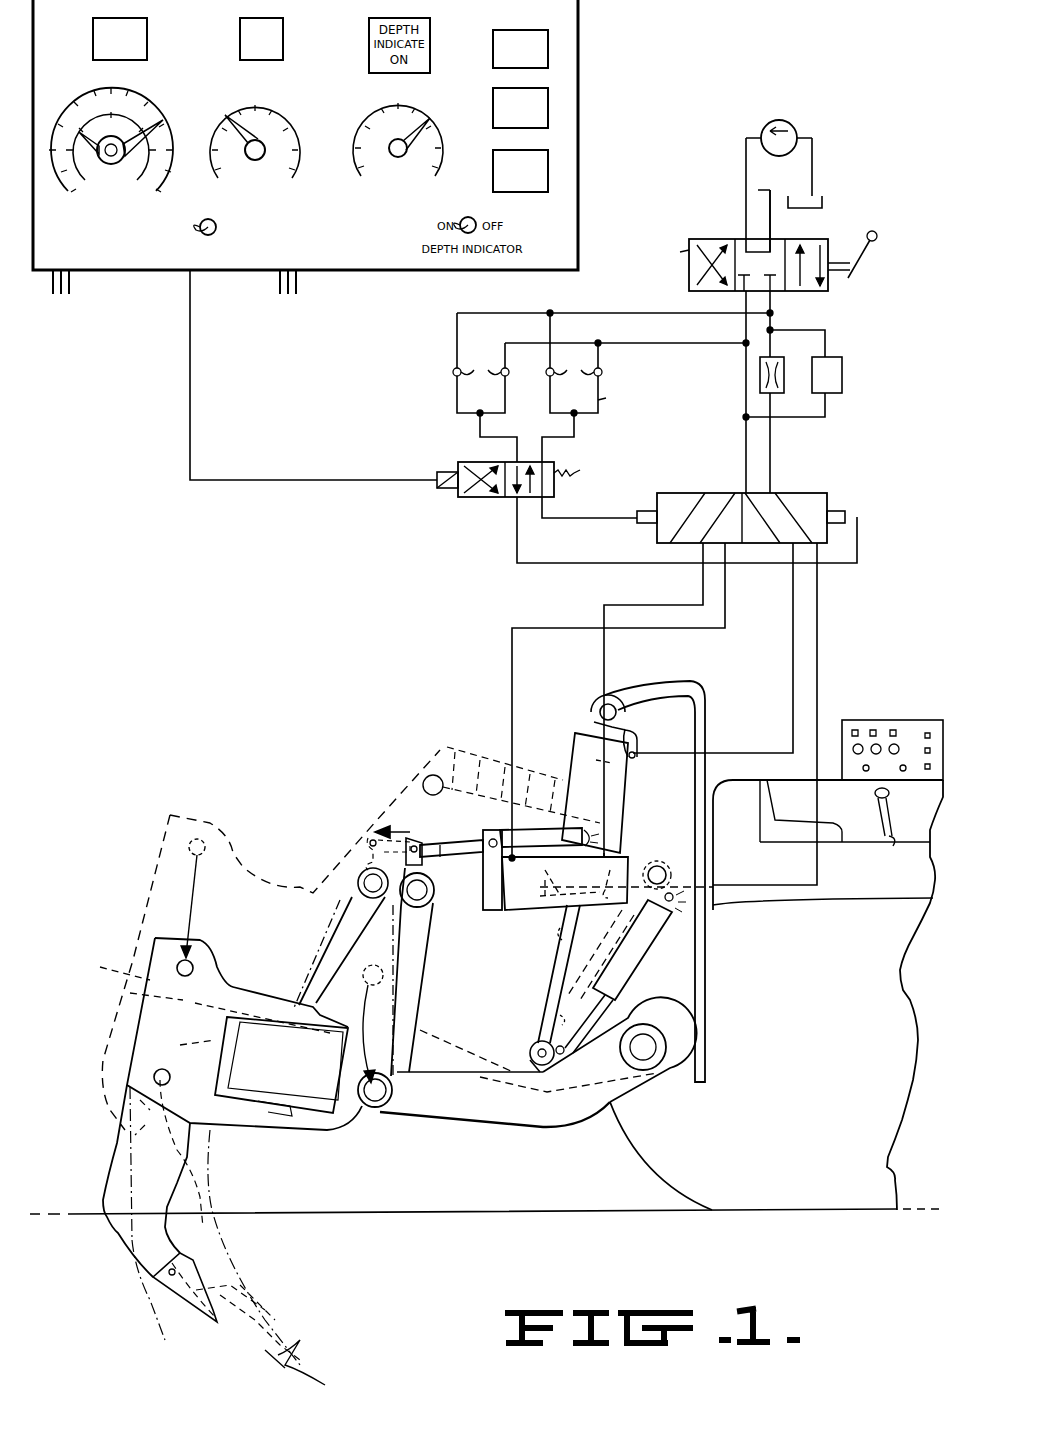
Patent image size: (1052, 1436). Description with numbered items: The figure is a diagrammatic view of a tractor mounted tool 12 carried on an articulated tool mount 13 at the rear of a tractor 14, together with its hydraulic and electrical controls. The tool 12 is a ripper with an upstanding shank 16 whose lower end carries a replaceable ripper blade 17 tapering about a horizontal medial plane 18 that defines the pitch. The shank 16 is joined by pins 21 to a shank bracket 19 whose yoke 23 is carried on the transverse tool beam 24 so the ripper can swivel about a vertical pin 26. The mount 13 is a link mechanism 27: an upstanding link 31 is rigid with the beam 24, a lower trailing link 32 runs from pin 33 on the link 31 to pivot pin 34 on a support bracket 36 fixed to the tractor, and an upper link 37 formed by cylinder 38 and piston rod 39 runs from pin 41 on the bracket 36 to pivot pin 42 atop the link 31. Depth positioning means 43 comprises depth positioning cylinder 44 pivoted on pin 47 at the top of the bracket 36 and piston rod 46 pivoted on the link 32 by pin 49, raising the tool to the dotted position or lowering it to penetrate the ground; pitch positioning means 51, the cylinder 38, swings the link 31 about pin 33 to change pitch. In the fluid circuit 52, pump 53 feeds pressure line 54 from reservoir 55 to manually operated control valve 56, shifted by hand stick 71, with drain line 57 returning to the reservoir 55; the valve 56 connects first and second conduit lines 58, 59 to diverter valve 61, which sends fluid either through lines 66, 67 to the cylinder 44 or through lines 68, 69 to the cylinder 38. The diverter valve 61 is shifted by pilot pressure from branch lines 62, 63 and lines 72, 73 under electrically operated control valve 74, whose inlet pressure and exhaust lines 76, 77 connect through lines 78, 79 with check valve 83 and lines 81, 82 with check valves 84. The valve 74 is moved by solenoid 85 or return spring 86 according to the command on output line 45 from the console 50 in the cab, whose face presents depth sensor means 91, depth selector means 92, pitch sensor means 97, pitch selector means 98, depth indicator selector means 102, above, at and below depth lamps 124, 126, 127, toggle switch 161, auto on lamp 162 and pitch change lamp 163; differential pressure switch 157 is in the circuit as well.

The tractor mounted tool 12 is at (115, 1243).
The articulated tool mount 13 is at (286, 840).
The tractor 14 is at (658, 1170).
The shank 16 is at (117, 1145).
The ripper blade 17 is at (200, 1312).
The horizontal medial plane 18 is at (310, 1335).
The shank bracket 19 is at (145, 985).
The pins 21 is at (192, 965).
The yoke 23 is at (265, 995).
The tool beam 24 is at (303, 1076).
The vertical pin 26 is at (345, 1008).
The link mechanism 27 is at (520, 1128).
The upstanding link 31 is at (355, 945).
The lower trailing link 32 is at (452, 1120).
The pin 33 is at (378, 1107).
The pivot pin 34 is at (645, 1060).
The support bracket 36 is at (706, 965).
The upper link 37 is at (620, 852).
The cylinder 38 is at (537, 894).
The piston rod 39 is at (470, 890).
The pin 41 is at (662, 870).
The pivot pin 42 is at (420, 900).
The depth positioning means 43 is at (570, 745).
The depth positioning cylinder 44 is at (602, 791).
The output line 45 is at (292, 487).
The piston rod 46 is at (552, 966).
The pin 47 is at (612, 705).
The pin 49 is at (528, 1051).
The console 50 is at (150, 272).
The pitch positioning means 51 is at (505, 910).
The fluid circuit 52 is at (675, 218).
The pump 53 is at (795, 125).
The pressure line 54 is at (745, 180).
The reservoir 55 is at (822, 200).
The manually operated control valve 56 is at (670, 249).
The drain line 57 is at (773, 178).
The first conduit line 58 is at (745, 297).
The second conduit line 59 is at (772, 300).
The diverter valve 61 is at (810, 492).
The branch line 62 is at (657, 349).
The branch line 63 is at (628, 312).
The line 66 is at (792, 623).
The line 67 is at (817, 630).
The line 68 is at (727, 598).
The line 69 is at (700, 585).
The hand stick 71 is at (877, 238).
The line 72 is at (548, 568).
The line 73 is at (580, 508).
The electrically operated control valve 74 is at (490, 500).
The inlet pressure line 76 is at (476, 432).
The exhaust line 77 is at (580, 435).
The line 78 is at (452, 398).
The line 79 is at (482, 399).
The line 81 is at (574, 364).
The line 82 is at (618, 397).
The check valve 83 is at (486, 362).
The check valves 84 is at (574, 361).
The solenoid 85 is at (440, 492).
The return spring 86 is at (576, 470).
The depth sensor means 91 is at (640, 962).
The depth selector means 92 is at (292, 108).
The pitch sensor means 97 is at (535, 832).
The pitch selector means 98 is at (158, 102).
The depth indicator selector means 102 is at (417, 105).
The above depth lamp 124 is at (548, 50).
The at depth lamp 126 is at (548, 110).
The below depth lamp 127 is at (548, 174).
The differential pressure switch 157 is at (842, 372).
The toggle switch 161 is at (212, 235).
The auto on lamp 162 is at (283, 44).
The pitch change indicating lamp 163 is at (147, 44).